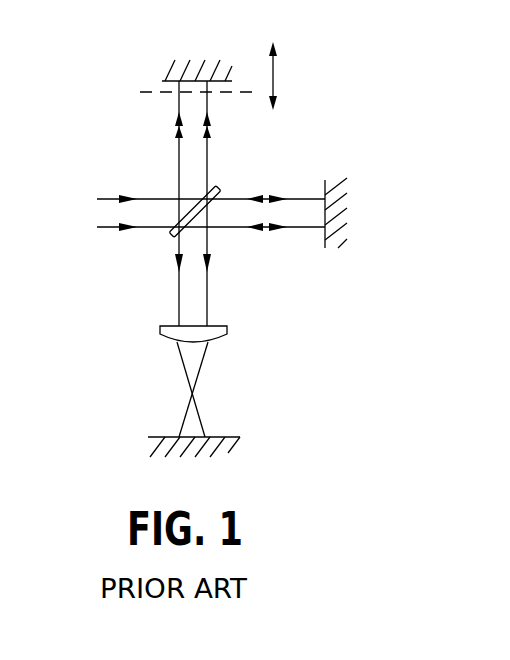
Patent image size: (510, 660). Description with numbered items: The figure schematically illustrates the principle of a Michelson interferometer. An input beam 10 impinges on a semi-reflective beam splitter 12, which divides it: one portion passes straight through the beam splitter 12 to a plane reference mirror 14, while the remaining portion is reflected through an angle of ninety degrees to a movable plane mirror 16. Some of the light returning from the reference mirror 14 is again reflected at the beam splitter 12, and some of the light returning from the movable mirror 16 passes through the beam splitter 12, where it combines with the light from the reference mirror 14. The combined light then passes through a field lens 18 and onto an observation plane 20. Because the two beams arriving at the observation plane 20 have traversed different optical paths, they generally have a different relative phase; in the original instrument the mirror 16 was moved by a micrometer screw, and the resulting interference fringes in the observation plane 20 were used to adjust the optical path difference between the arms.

The input beam 10 is at (104, 198).
The beam splitter 12 is at (220, 189).
The plane reference mirror 14 is at (337, 184).
The movable plane mirror 16 is at (168, 70).
The field lens 18 is at (218, 326).
The observation plane 20 is at (237, 437).